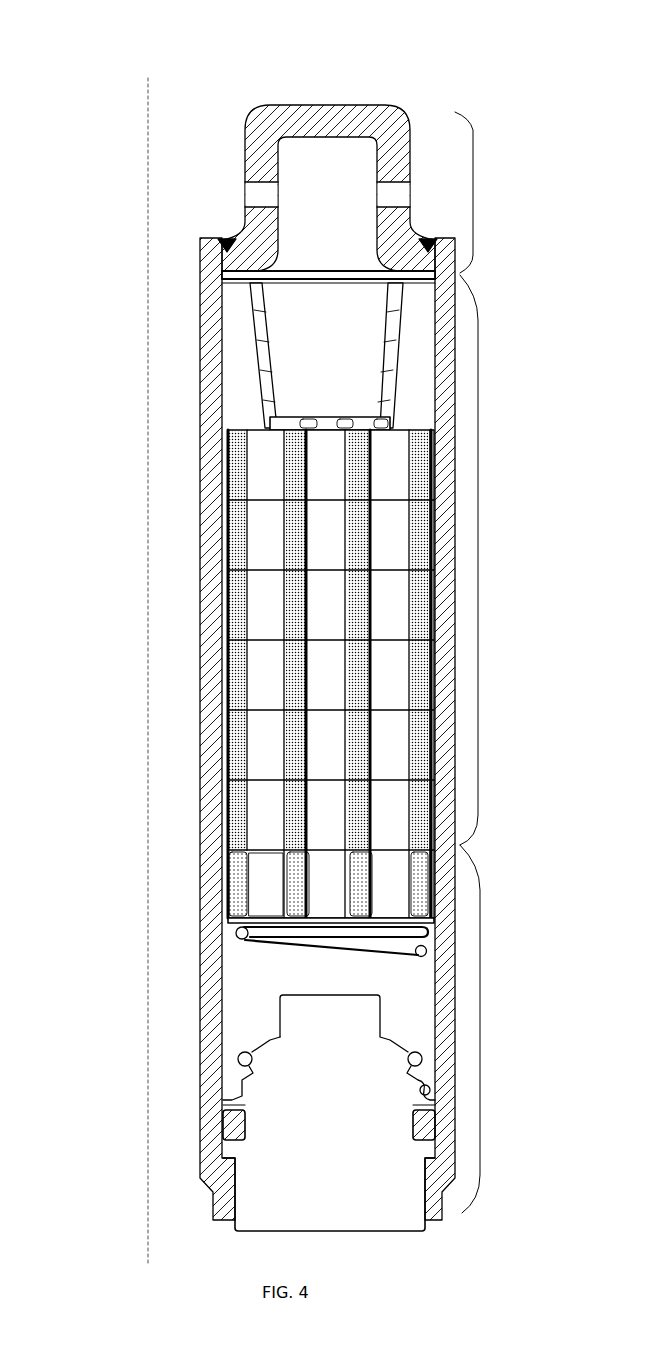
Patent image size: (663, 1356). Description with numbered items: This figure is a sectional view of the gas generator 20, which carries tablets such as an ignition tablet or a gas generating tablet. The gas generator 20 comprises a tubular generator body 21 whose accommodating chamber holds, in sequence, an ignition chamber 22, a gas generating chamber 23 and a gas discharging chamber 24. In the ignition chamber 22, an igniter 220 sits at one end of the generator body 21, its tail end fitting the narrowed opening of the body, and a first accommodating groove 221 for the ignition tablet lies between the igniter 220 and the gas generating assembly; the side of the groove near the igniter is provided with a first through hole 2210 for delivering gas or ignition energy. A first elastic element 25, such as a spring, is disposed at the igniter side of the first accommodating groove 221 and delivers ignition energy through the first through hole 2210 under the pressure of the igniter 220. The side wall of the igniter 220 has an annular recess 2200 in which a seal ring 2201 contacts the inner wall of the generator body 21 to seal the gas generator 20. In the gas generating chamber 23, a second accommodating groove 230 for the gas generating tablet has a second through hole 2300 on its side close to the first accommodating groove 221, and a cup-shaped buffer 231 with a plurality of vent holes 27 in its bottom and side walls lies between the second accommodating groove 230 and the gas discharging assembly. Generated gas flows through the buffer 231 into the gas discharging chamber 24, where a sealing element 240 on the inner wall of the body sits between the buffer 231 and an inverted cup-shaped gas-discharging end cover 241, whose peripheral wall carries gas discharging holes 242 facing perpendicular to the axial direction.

The gas generator 20 is at (340, 31).
The generator body 21 is at (212, 545).
The ignition chamber 22 is at (480, 1035).
The gas generating chamber 23 is at (478, 557).
The gas discharging chamber 24 is at (474, 195).
The first elastic element 25 is at (240, 938).
The vent hole 27 is at (268, 400).
The igniter 220 is at (280, 1070).
The first accommodating groove 221 is at (265, 885).
The second accommodating groove 230 is at (245, 672).
The buffer 231 is at (278, 362).
The sealing element 240 is at (265, 275).
The gas-discharging end cover 241 is at (283, 127).
The gas discharging hole 242 is at (265, 191).
The recess 2200 is at (237, 1146).
The seal ring 2201 is at (235, 1122).
The first through hole 2210 is at (243, 916).
The second through hole 2300 is at (262, 800).